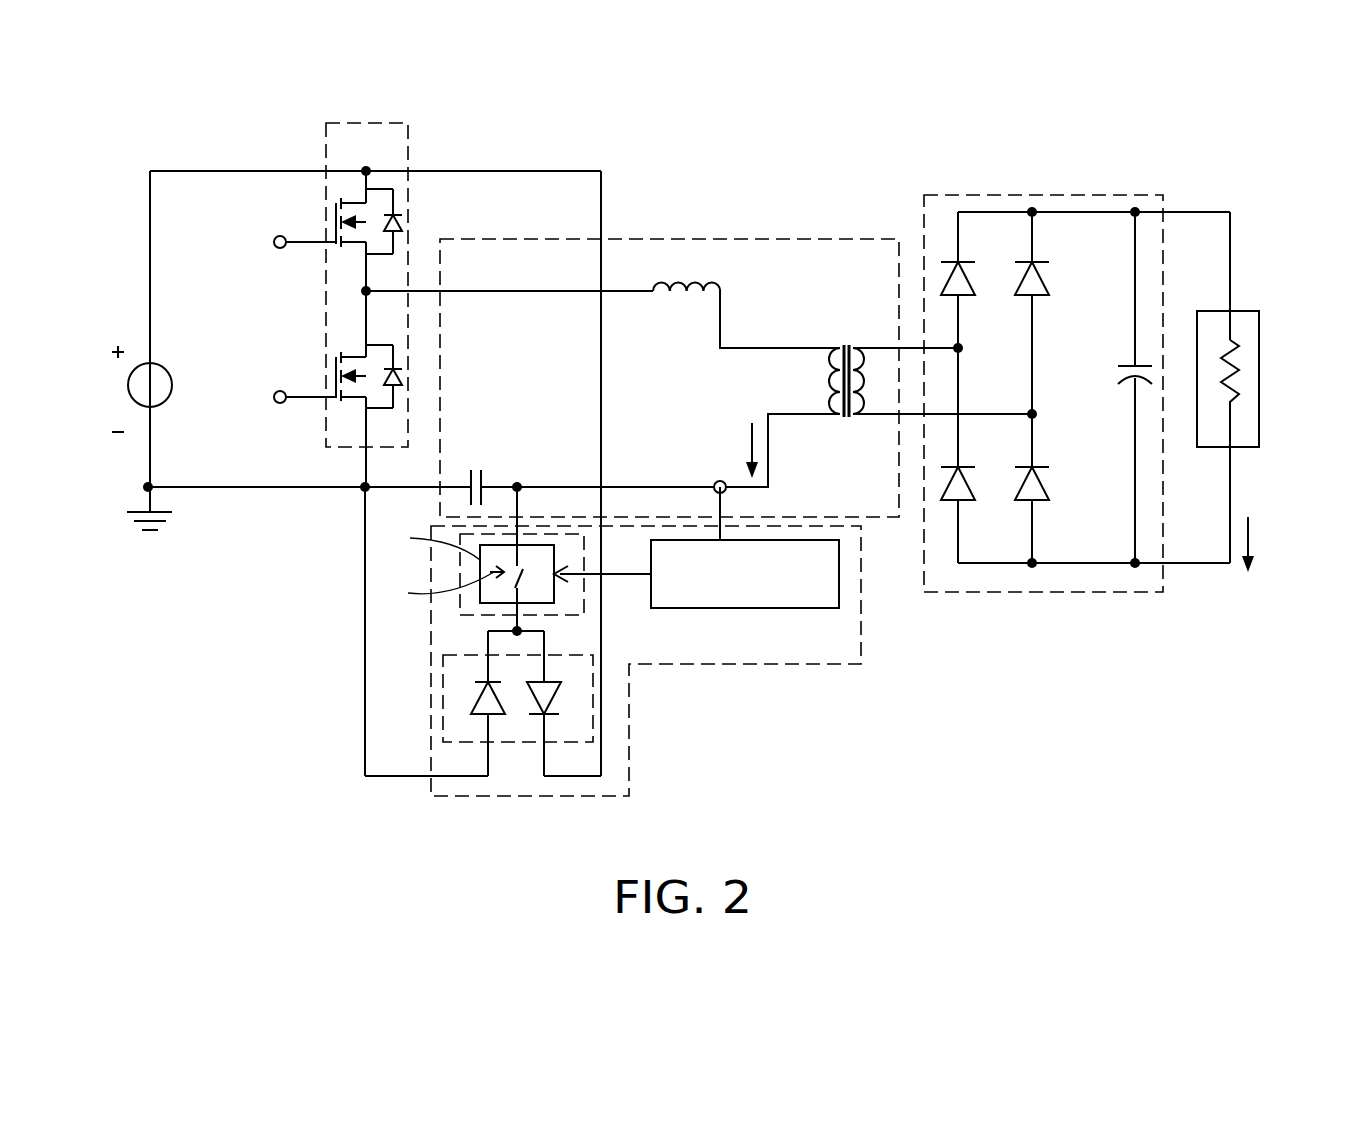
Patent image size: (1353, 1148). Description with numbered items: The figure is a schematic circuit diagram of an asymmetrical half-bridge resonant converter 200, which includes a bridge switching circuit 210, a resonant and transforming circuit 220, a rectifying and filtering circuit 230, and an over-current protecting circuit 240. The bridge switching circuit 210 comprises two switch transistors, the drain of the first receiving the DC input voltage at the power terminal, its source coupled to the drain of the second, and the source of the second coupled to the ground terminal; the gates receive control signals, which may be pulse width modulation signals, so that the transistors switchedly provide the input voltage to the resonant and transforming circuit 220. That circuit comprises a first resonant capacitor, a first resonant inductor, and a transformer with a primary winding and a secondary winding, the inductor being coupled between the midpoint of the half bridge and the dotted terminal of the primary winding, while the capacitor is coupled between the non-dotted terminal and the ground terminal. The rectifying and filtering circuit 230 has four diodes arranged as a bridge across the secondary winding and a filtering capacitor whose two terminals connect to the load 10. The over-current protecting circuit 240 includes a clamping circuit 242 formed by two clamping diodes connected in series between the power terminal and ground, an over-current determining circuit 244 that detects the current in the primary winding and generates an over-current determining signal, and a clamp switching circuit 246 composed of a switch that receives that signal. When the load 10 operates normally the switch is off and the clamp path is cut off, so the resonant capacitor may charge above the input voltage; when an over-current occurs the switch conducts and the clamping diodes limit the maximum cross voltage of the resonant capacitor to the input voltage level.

The load 10 is at (1259, 355).
The resonant converter 200 is at (1252, 729).
The bridge switching circuit 210 is at (376, 300).
The resonant and transforming circuit 220 is at (699, 340).
The rectifying and filtering circuit 230 is at (1071, 353).
The over-current protecting circuit 240 is at (642, 641).
The clamping circuit 242 is at (593, 698).
The over-current determining circuit 244 is at (839, 575).
The clamp switching circuit 246 is at (584, 594).